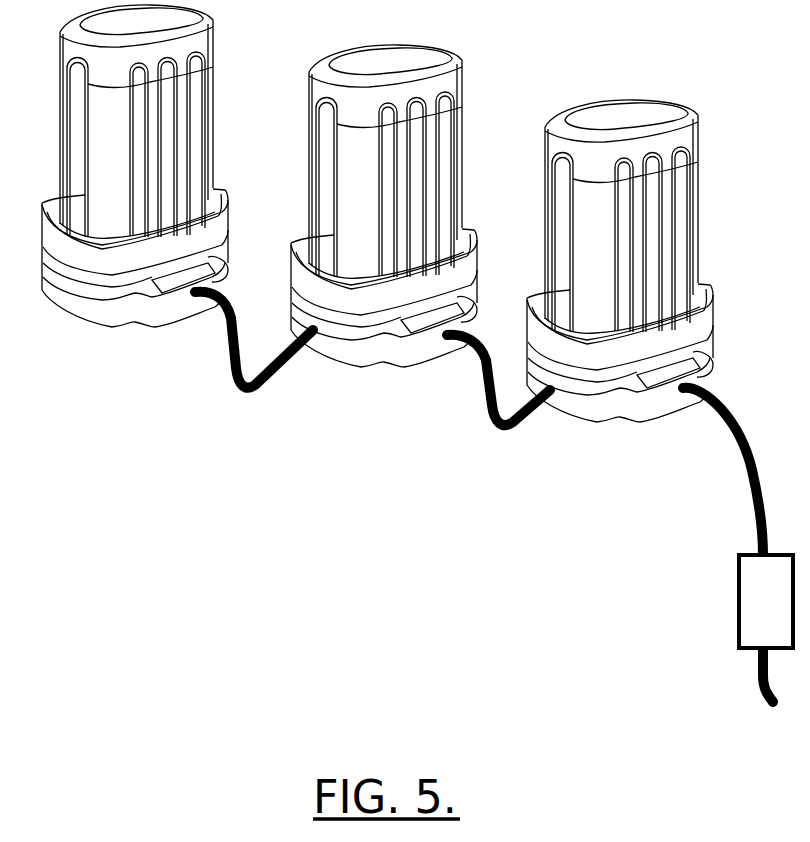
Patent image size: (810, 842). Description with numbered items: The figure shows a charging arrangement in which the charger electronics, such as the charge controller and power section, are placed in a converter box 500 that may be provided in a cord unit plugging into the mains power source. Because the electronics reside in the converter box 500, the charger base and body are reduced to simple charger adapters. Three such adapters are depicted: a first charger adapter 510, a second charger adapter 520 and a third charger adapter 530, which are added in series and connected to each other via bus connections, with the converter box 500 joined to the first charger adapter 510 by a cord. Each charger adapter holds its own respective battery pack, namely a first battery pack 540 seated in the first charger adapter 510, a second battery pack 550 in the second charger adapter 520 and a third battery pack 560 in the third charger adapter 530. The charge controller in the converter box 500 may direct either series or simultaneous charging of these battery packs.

The converter box 500 is at (748, 590).
The first charger adapter 510 is at (707, 312).
The second charger adapter 520 is at (468, 262).
The third charger adapter 530 is at (220, 220).
The first battery pack 540 is at (605, 262).
The second battery pack 550 is at (368, 210).
The third battery pack 560 is at (118, 170).